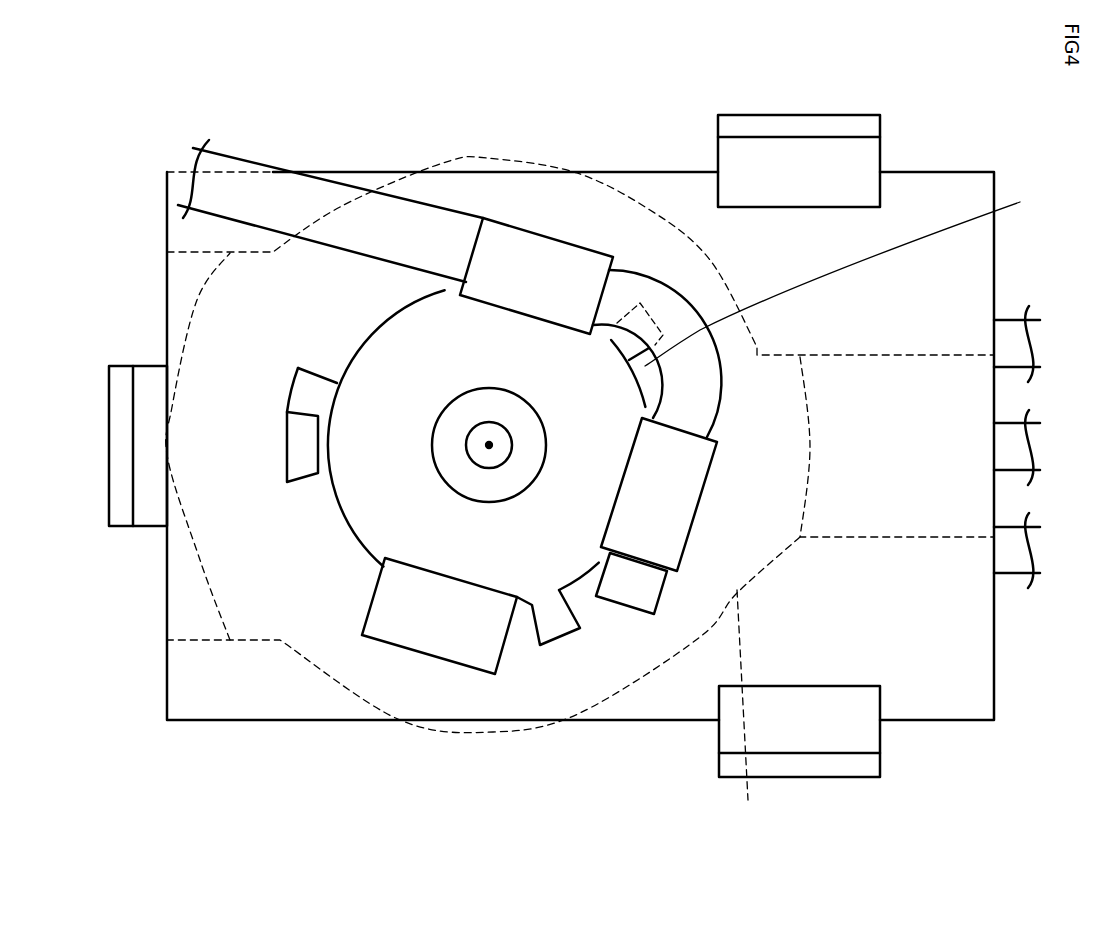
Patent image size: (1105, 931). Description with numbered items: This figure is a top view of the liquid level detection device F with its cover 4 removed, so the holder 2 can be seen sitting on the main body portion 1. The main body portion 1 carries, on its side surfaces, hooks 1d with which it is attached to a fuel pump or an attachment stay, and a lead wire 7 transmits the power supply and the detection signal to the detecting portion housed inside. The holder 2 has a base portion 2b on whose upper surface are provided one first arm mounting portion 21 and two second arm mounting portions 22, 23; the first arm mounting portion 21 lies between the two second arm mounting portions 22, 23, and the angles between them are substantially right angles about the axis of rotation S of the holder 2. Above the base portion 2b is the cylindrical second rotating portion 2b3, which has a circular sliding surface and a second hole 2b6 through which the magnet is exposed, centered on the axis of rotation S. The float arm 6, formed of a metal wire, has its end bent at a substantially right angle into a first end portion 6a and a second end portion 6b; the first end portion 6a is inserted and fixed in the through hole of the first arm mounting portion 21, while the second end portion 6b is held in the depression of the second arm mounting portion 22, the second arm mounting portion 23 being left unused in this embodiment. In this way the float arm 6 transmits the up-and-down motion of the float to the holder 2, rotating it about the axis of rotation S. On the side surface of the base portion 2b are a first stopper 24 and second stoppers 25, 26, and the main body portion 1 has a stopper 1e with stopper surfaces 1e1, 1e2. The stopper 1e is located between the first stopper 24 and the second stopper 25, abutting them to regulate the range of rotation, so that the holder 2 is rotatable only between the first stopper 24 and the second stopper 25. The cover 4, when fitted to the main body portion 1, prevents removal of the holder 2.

The main body portion 1 is at (922, 190).
The hook 1d is at (845, 122).
The stopper 1e is at (287, 428).
The stopper surface 1e1 is at (293, 397).
The stopper surface 1e2 is at (289, 484).
The holder 2 is at (407, 297).
The base portion 2b is at (380, 337).
The second rotating portion 2b3 is at (558, 632).
The second hole 2b6 is at (506, 436).
The cover 4 is at (290, 665).
The float arm 6 is at (223, 165).
The first end portion 6a is at (655, 580).
The second end portion 6b is at (620, 287).
The lead wire 7 is at (1007, 332).
The first arm mounting portion 21 is at (748, 706).
The second arm mounting portion 22 is at (497, 250).
The second arm mounting portion 23 is at (440, 640).
The first stopper 24 is at (290, 385).
The second stopper 25 is at (513, 473).
The second stopper 26 is at (845, 275).
The axis of rotation S is at (488, 450).
The liquid level detection device F is at (323, 157).